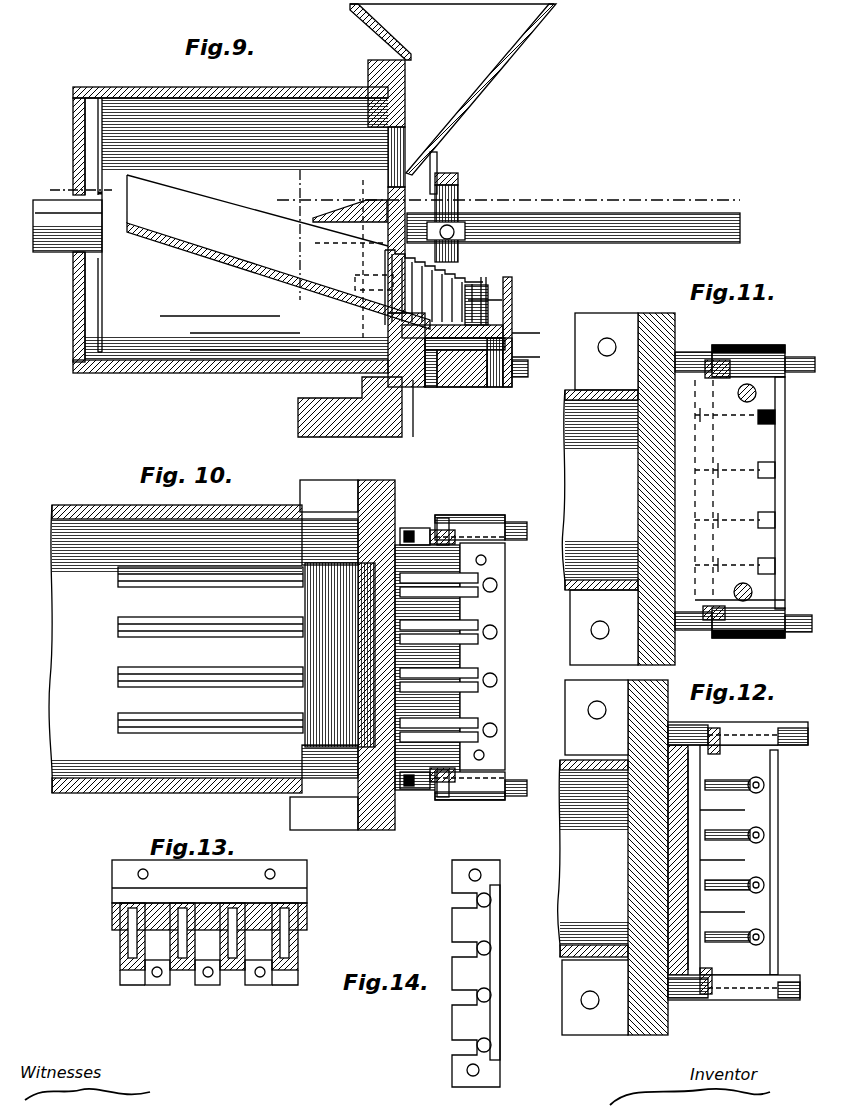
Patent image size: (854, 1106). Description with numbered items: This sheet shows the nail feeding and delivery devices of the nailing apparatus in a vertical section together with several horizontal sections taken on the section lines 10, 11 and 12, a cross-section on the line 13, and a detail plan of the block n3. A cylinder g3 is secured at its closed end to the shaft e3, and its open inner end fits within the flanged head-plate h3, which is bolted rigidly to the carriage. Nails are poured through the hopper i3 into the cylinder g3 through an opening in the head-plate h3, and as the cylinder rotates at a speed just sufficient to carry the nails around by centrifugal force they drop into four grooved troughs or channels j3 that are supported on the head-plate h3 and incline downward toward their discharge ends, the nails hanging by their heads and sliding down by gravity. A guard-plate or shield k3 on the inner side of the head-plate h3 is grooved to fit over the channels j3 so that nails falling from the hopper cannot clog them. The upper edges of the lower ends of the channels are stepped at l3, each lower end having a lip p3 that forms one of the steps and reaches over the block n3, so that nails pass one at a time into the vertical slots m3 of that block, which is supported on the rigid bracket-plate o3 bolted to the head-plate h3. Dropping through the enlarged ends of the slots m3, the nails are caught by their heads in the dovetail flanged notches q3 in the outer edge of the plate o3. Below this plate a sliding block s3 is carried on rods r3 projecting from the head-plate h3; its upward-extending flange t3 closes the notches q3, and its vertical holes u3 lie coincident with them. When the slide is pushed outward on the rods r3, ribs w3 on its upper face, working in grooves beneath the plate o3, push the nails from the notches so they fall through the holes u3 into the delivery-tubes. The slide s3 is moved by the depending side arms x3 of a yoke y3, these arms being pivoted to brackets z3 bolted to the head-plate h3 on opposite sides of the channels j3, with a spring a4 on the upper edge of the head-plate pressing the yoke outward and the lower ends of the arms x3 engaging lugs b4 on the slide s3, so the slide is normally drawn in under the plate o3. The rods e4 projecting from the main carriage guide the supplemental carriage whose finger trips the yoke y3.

In FIG. 9, the cylinder g3 is at (140, 102).
In FIG. 10, the cylinder g3 is at (82, 525).
In FIG. 11, the cylinder g3 is at (600, 490).
In FIG. 12, the cylinder g3 is at (593, 858).
In FIG. 9, the flanged head-plate h3 is at (368, 76).
In FIG. 10, the flanged head-plate h3 is at (372, 485).
In FIG. 11, the flanged head-plate h3 is at (652, 322).
In FIG. 12, the flanged head-plate h3 is at (628, 738).
In FIG. 9, the hopper i3 is at (453, 89).
In FIG. 9, the grooved rails or troughs j3 is at (250, 220).
In FIG. 10, the grooved rails or troughs j3 is at (215, 585).
In FIG. 13, the grooved rails or troughs j3 is at (120, 946).
In FIG. 9, the guard-plate k3 is at (343, 218).
In FIG. 10, the guard-plate k3 is at (340, 655).
In FIG. 13, the guard-plate k3 is at (130, 894).
In FIG. 9, the shaft e3 is at (95, 218).
In FIG. 9, the rods e4 is at (582, 221).
In FIG. 9, the steps l3 is at (455, 262).
In FIG. 10, the steps l3 is at (427, 667).
In FIG. 9, the vertical slots m3 is at (500, 300).
In FIG. 10, the vertical slots m3 is at (497, 585).
In FIG. 14, the vertical slots m3 is at (458, 900).
In FIG. 9, the block n3 is at (473, 283).
In FIG. 10, the block n3 is at (497, 568).
In FIG. 14, the block n3 is at (458, 962).
In FIG. 9, the bracket-plate o3 is at (424, 414).
In FIG. 11, the bracket-plate o3 is at (690, 480).
In FIG. 12, the bracket-plate o3 is at (670, 868).
In FIG. 9, the lip p3 is at (488, 282).
In FIG. 10, the lip p3 is at (497, 630).
In FIG. 11, the flanged notches q3 is at (775, 418).
In FIG. 9, the rods r3 is at (520, 378).
In FIG. 10, the rods r3 is at (527, 530).
In FIG. 11, the rods r3 is at (800, 360).
In FIG. 12, the rods r3 is at (680, 726).
In FIG. 9, the sliding block s3 is at (492, 382).
In FIG. 10, the sliding block s3 is at (490, 520).
In FIG. 11, the sliding block s3 is at (752, 348).
In FIG. 12, the sliding block s3 is at (732, 840).
In FIG. 9, the upward-extending flange t3 is at (512, 330).
In FIG. 11, the upward-extending flange t3 is at (785, 400).
In FIG. 12, the upward-extending flange t3 is at (778, 795).
In FIG. 9, the vertical holes u3 is at (498, 385).
In FIG. 9, the ribs w3 is at (460, 355).
In FIG. 12, the ribs w3 is at (732, 782).
In FIG. 9, the depending side arms x3 is at (458, 210).
In FIG. 10, the depending side arms x3 is at (450, 530).
In FIG. 11, the depending side arms x3 is at (712, 360).
In FIG. 9, the yoke y3 is at (458, 177).
In FIG. 11, the yoke y3 is at (775, 470).
In FIG. 9, the brackets z3 is at (485, 222).
In FIG. 10, the brackets z3 is at (412, 528).
In FIG. 9, the spring a4 is at (437, 155).
In FIG. 10, the lugs b4 is at (446, 518).
In FIG. 12, the lugs b4 is at (720, 740).
In FIG. 9, the section line 10 10 is at (382, 197).
In FIG. 9, the section line 11 11 is at (375, 329).
In FIG. 9, the section line 12 12 is at (375, 352).
In FIG. 9, the section line 13 13 is at (276, 242).